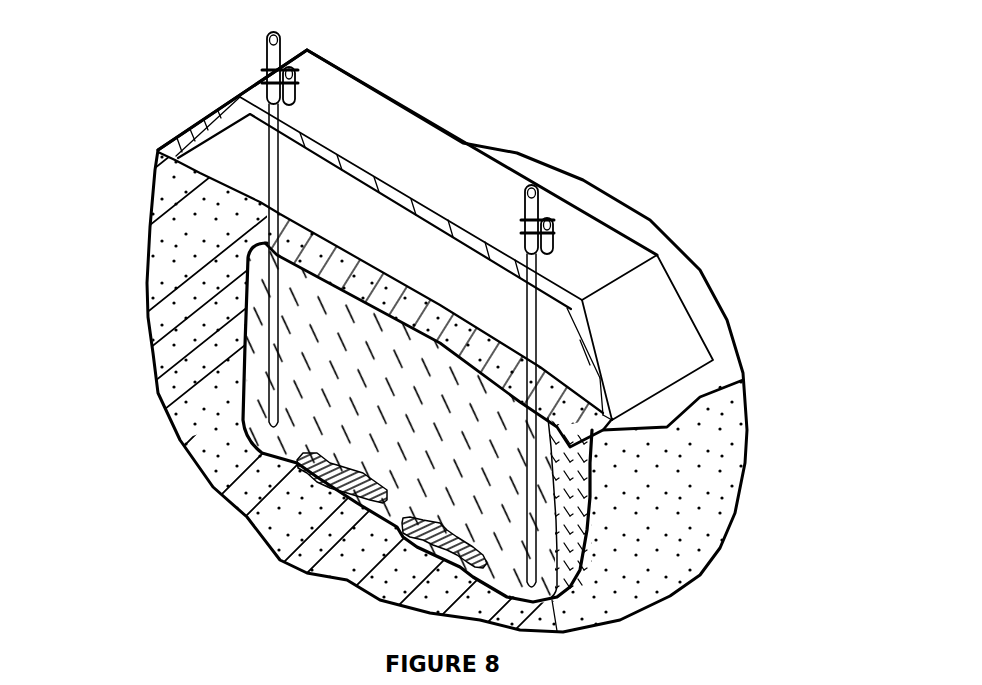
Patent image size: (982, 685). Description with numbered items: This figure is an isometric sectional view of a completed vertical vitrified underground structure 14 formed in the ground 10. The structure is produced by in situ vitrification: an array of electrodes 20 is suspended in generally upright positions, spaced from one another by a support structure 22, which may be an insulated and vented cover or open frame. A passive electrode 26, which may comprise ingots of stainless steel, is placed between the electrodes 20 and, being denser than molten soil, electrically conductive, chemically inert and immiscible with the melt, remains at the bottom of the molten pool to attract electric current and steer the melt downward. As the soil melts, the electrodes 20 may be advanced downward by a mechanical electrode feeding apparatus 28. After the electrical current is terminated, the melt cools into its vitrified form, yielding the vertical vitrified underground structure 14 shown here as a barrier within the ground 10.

The ground 10 is at (272, 508).
The vertical vitrified underground structure 14 is at (248, 322).
The electrodes 20 is at (540, 206).
The support structure 22 is at (200, 120).
The passive electrode 26 is at (477, 537).
The mechanical electrode feeding apparatus 28 is at (284, 84).